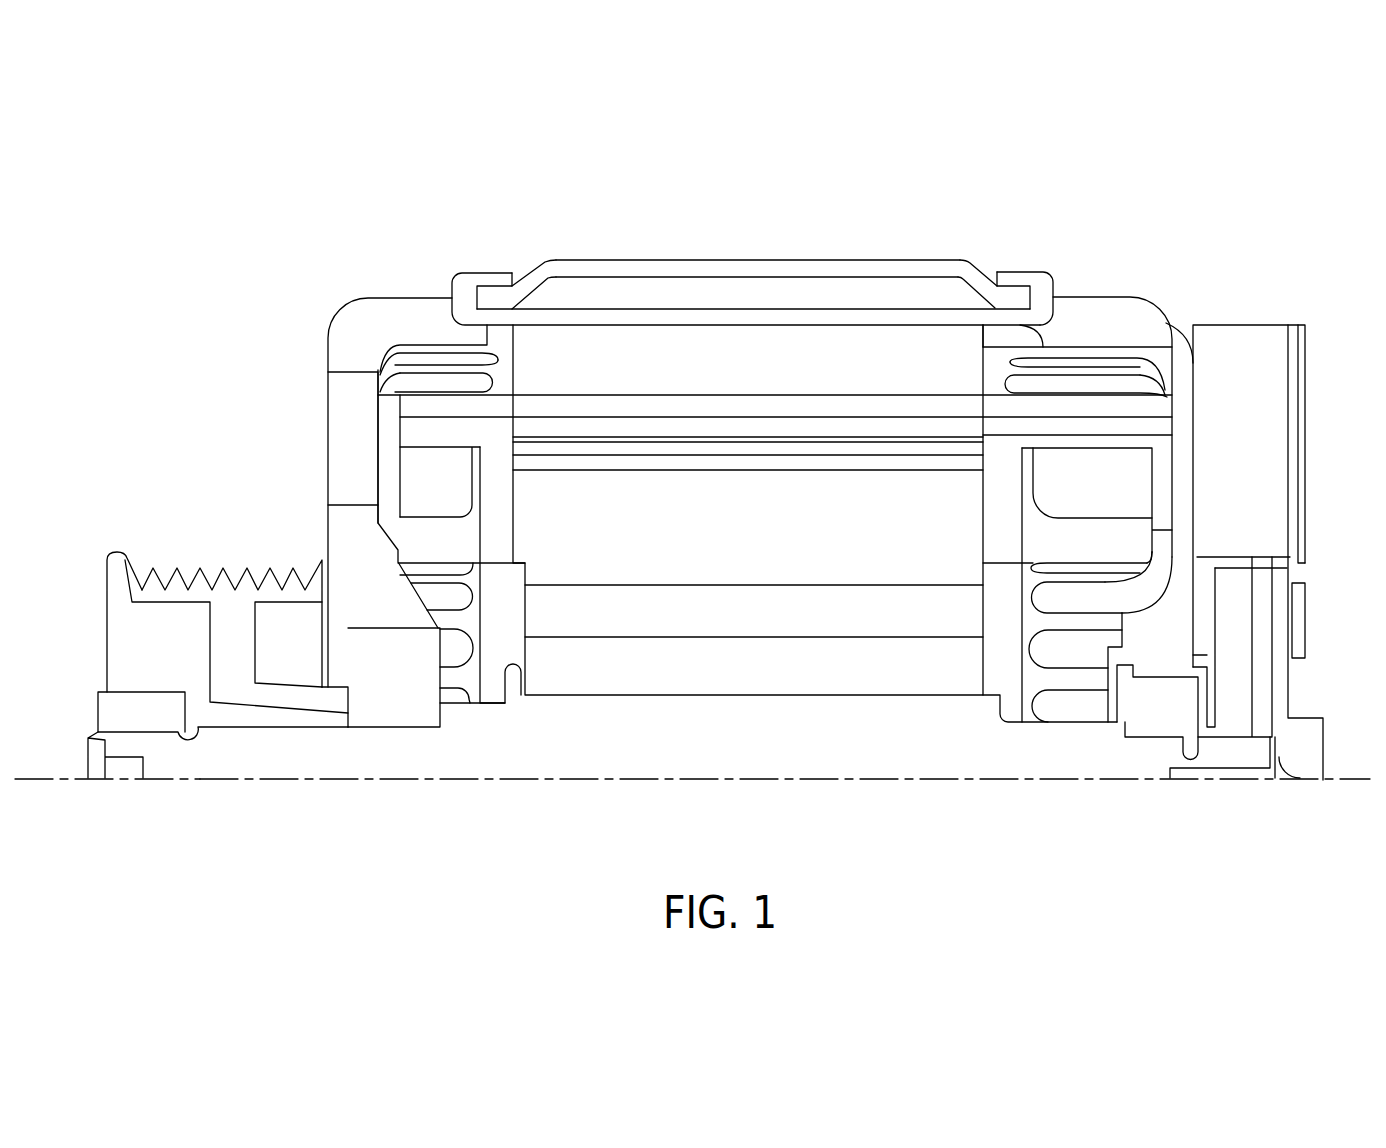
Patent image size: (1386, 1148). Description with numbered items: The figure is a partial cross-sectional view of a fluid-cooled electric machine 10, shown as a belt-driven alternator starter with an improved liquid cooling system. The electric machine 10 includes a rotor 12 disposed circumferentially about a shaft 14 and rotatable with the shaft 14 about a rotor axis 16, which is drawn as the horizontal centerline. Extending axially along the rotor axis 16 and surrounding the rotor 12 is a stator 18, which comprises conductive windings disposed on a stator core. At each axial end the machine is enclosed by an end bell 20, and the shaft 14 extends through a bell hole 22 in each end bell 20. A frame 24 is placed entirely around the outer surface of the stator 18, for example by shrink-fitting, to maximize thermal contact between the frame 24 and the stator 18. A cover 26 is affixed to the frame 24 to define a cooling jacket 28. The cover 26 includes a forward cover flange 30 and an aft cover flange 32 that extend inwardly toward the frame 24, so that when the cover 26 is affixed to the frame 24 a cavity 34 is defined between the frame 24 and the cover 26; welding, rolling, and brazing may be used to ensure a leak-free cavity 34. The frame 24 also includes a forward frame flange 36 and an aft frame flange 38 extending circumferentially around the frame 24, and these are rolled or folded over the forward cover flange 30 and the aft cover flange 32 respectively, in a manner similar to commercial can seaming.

The electric machine 10 is at (207, 263).
The rotor 12 is at (668, 565).
The shaft 14 is at (472, 752).
The rotor axis 16 is at (43, 782).
The stator 18 is at (657, 347).
The end bell 20 is at (396, 305).
The bell hole 22 is at (392, 705).
The frame 24 is at (888, 307).
The cover 26 is at (755, 260).
The cooling jacket 28 is at (783, 206).
The forward cover flange 30 is at (537, 260).
The aft cover flange 32 is at (993, 262).
The cavity 34 is at (840, 287).
The forward frame flange 36 is at (482, 273).
The aft frame flange 38 is at (1060, 283).